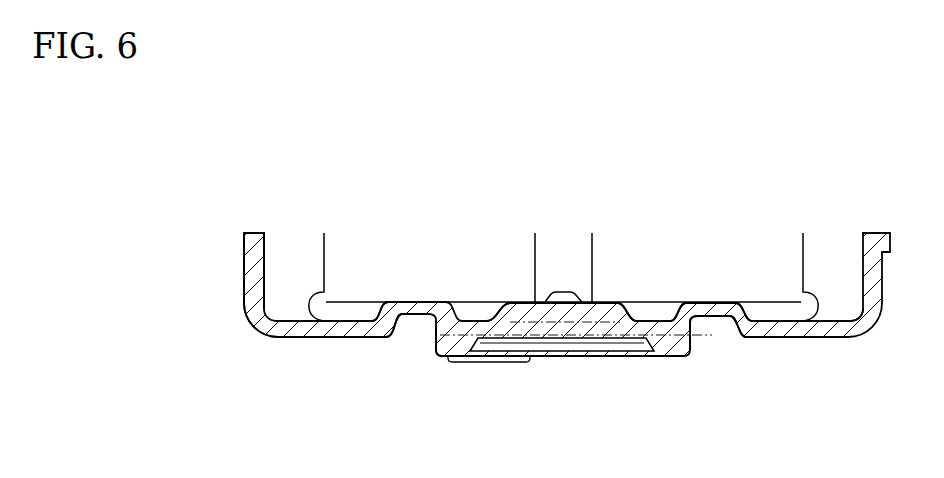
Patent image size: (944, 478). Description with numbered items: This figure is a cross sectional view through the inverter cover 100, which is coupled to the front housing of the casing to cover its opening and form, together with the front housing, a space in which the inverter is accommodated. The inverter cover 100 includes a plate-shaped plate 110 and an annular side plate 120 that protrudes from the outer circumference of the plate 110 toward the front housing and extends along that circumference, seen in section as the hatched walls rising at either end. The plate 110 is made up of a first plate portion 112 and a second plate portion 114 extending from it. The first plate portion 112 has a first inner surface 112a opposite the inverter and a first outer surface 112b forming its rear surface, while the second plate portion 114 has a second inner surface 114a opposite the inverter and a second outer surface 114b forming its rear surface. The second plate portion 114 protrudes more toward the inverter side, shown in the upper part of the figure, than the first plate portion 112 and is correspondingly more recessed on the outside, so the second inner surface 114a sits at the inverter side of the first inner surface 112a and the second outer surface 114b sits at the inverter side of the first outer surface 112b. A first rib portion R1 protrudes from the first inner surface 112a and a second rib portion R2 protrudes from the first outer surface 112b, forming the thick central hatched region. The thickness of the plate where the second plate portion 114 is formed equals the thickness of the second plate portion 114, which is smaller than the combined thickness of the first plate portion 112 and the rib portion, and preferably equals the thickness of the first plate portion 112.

The inverter cover 100 is at (223, 189).
The plate 110 is at (388, 411).
The first plate portion 112 is at (320, 339).
The first inner surface 112a is at (824, 321).
The first outer surface 112b is at (797, 338).
The second plate portion 114 is at (398, 315).
The second inner surface 114a is at (712, 304).
The second outer surface 114b is at (714, 318).
The side plate 120 is at (249, 258).
The first rib portion R1 is at (602, 304).
The second rib portion R2 is at (443, 350).